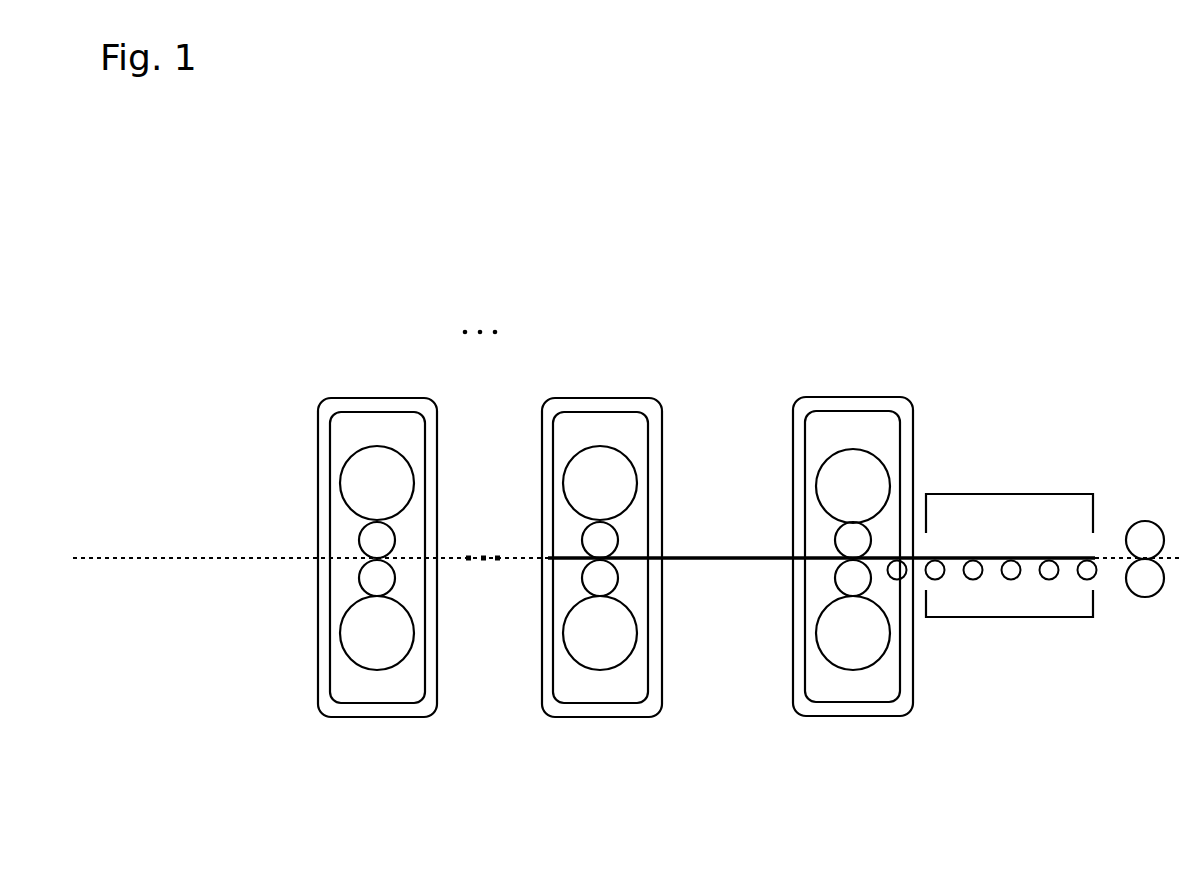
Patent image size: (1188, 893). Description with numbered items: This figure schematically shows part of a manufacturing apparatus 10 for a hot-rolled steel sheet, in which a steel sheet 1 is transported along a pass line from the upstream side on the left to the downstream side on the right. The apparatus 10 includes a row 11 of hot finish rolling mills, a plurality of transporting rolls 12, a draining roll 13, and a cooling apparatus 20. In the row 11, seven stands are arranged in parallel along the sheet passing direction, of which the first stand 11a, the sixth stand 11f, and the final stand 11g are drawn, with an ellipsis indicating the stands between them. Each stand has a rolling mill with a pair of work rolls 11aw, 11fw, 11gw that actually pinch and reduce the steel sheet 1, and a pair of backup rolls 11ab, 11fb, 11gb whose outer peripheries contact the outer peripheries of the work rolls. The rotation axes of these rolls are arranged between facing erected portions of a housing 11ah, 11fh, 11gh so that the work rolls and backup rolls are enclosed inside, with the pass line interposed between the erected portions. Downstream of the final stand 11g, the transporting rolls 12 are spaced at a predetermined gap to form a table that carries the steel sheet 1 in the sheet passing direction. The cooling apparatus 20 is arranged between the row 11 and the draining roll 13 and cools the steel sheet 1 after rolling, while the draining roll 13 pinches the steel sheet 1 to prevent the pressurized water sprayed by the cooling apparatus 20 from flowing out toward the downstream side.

The steel sheet 1 is at (676, 553).
The manufacturing apparatus 10 is at (684, 143).
The row of hot finish rolling mills 11 is at (348, 285).
The stand 11a is at (380, 375).
The housing 11ah is at (329, 404).
The backup rolls 11ab is at (352, 483).
The work rolls 11aw is at (372, 538).
The stand 11f is at (602, 375).
The housing 11fh is at (548, 412).
The backup rolls 11fb is at (576, 483).
The work rolls 11fw is at (595, 538).
The stand 11g is at (861, 363).
The housing 11gh is at (897, 408).
The backup rolls 11gb is at (842, 487).
The work rolls 11gw is at (850, 540).
The transporting roll 12 is at (973, 578).
The draining roll 13 is at (1140, 510).
The cooling apparatus 20 is at (1013, 462).